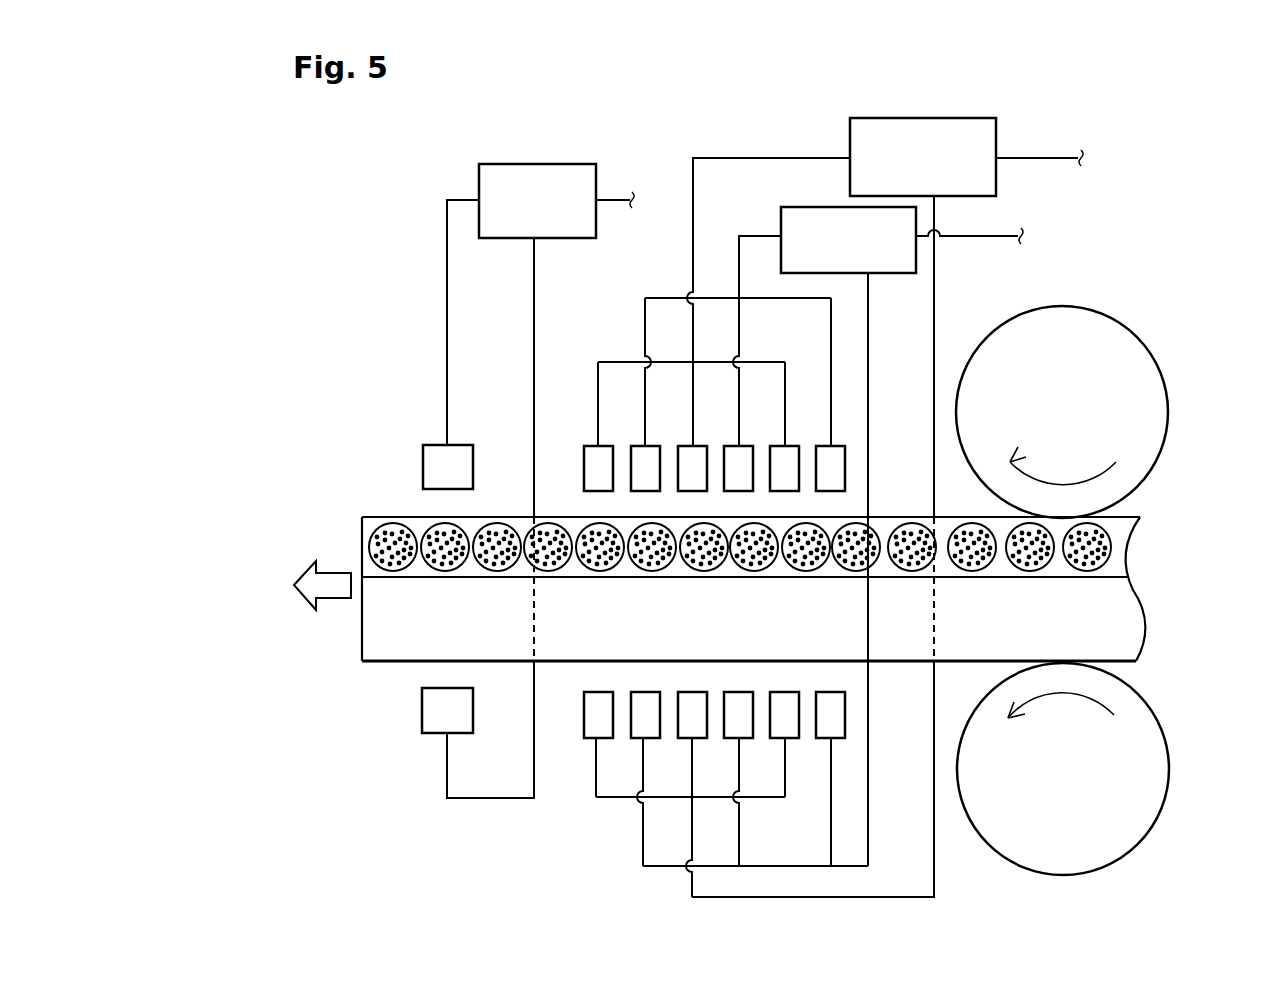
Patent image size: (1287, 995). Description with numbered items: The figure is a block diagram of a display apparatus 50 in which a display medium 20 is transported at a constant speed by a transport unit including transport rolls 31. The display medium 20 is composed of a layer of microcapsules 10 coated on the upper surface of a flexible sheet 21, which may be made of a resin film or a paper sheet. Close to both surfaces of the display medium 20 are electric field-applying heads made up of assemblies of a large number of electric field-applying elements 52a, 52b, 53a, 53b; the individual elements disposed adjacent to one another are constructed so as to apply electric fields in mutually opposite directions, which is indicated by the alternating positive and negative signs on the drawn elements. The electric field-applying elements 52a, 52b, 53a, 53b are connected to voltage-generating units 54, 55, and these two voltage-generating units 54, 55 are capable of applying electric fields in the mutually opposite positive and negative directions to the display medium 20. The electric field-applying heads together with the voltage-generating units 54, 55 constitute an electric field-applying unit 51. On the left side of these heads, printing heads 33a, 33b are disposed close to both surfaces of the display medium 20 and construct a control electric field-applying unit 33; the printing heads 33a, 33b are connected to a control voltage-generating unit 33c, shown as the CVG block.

The microcapsules 10 is at (383, 530).
The display medium 20 is at (1152, 572).
The flexible sheet 21 is at (1132, 631).
The transport rolls 31 is at (1137, 360).
The control electric field-applying unit 33 is at (450, 453).
The printing head 33a is at (425, 447).
The printing head 33b is at (422, 707).
The control voltage-generating unit 33c is at (546, 164).
The display apparatus 50 is at (874, 491).
The electric field-applying unit 51 is at (805, 491).
The electric field-applying element 52a is at (592, 446).
The electric field-applying element 52b is at (592, 738).
The electric field-applying element 53a is at (640, 446).
The electric field-applying element 53b is at (640, 738).
The voltage-generating unit 54 is at (985, 118).
The voltage-generating unit 55 is at (800, 207).